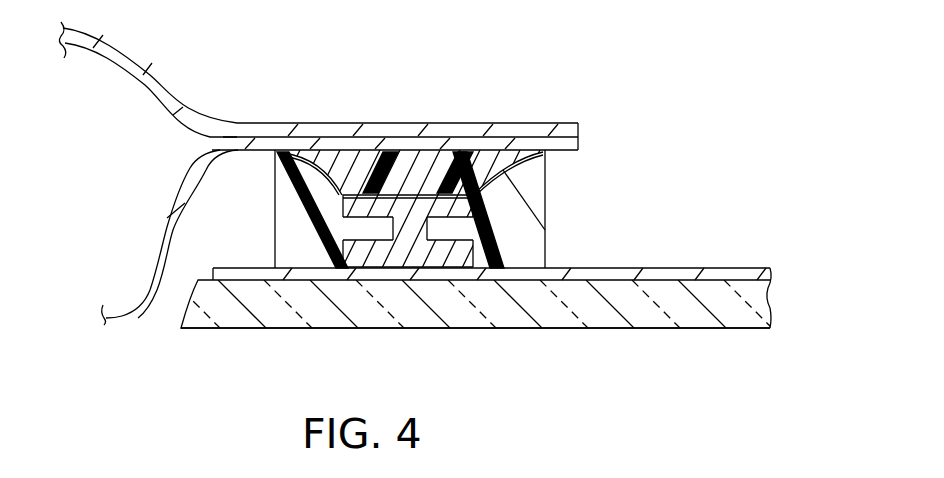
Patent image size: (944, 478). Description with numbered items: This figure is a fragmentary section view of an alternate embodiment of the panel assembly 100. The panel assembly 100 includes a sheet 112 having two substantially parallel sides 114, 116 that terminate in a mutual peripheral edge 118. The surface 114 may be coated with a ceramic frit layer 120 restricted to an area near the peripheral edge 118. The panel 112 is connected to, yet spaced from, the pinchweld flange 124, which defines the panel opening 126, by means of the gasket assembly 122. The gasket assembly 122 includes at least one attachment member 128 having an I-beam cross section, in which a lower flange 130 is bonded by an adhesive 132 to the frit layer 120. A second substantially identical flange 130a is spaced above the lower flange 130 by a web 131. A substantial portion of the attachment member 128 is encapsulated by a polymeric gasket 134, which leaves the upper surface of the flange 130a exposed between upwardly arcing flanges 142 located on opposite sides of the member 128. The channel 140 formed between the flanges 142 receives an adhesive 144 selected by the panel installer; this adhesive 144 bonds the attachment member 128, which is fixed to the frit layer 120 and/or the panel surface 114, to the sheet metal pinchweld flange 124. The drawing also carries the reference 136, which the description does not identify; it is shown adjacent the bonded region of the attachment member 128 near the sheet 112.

The panel assembly 100 is at (662, 145).
The sheet 112 is at (762, 266).
The side 114 is at (692, 272).
The side 116 is at (670, 327).
The peripheral edge 118 is at (192, 325).
The ceramic frit layer 120 is at (628, 272).
The gasket assembly 122 is at (563, 200).
The pinchweld flange 124 is at (478, 123).
The panel opening 126 is at (580, 132).
The attachment member 128 is at (424, 175).
The lower flange 130 is at (363, 255).
The second flange 130a is at (352, 207).
The web 131 is at (393, 237).
The adhesive 132 is at (450, 222).
The polymeric gasket 134 is at (545, 237).
The solder joint 136 is at (438, 228).
The channel 140 is at (385, 152).
The upwardly arcing flanges 142 is at (256, 155).
The adhesive 144 is at (342, 165).